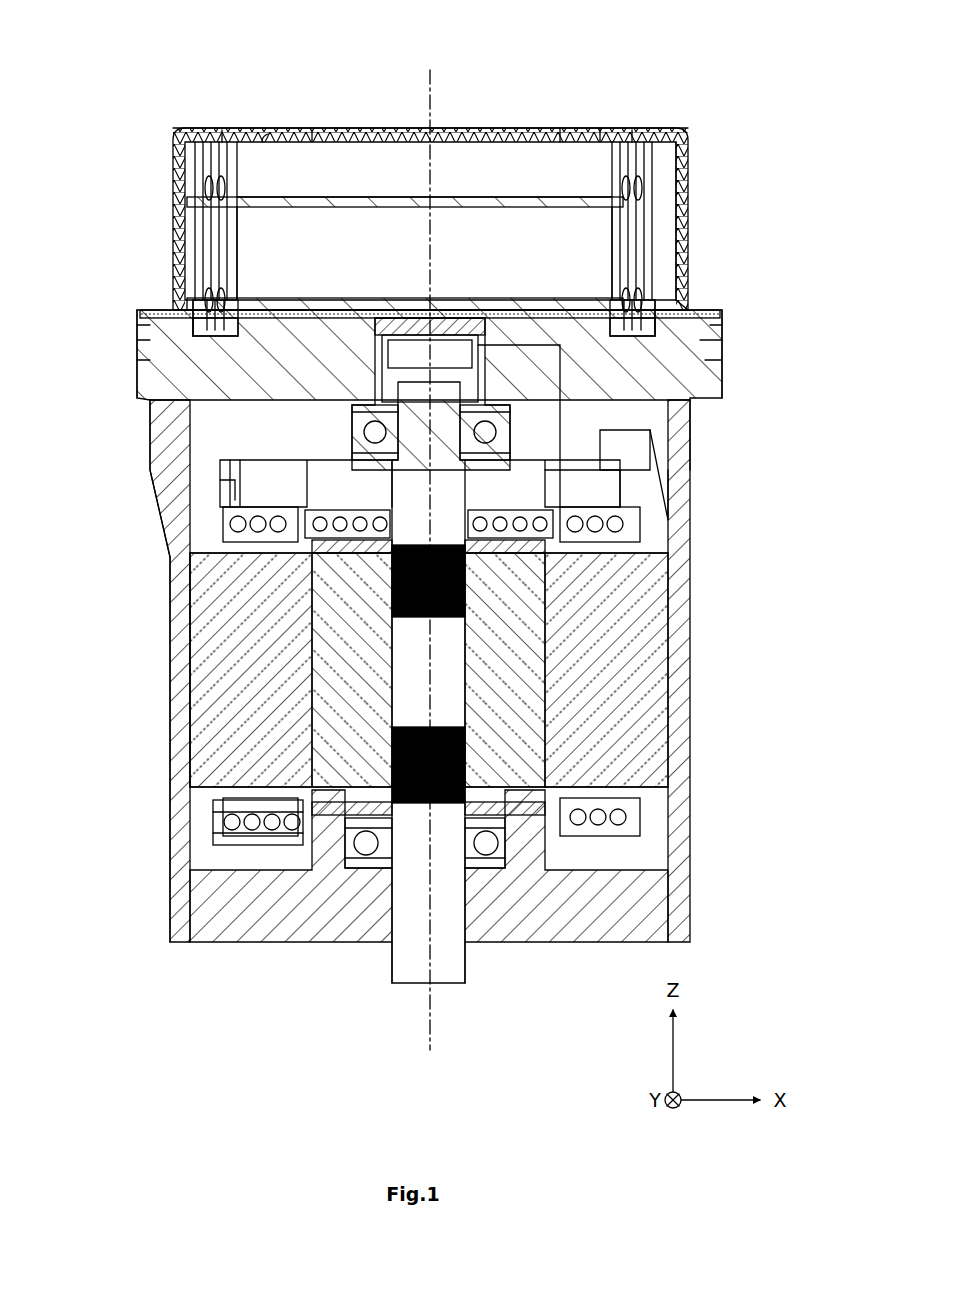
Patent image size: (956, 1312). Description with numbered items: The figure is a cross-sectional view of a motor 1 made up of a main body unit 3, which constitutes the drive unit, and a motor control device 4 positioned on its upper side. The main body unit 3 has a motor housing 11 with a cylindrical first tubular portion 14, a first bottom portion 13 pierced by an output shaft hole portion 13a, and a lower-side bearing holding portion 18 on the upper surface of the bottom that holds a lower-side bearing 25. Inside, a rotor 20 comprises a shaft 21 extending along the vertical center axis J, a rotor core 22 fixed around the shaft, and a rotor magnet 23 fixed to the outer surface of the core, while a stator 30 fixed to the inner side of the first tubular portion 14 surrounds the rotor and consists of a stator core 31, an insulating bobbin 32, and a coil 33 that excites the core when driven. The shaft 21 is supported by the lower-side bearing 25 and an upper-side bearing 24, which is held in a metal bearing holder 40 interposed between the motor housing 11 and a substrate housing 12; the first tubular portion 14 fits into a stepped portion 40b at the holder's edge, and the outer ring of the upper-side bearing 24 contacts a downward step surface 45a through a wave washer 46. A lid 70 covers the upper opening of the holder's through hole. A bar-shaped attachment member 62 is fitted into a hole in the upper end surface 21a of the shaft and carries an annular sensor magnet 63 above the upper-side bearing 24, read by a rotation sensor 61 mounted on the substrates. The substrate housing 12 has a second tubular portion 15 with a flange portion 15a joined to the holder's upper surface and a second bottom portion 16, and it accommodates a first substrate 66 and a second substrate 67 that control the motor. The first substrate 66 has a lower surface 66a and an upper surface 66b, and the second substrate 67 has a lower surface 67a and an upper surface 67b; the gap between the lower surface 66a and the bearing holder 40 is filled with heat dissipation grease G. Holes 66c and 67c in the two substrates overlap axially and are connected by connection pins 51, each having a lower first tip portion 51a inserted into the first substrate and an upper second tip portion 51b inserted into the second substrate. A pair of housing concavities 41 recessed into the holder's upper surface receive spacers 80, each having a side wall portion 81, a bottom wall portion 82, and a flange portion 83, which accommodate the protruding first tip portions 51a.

The motor 1 is at (728, 112).
The main body unit 3 is at (168, 585).
The motor control device 4 is at (170, 135).
The motor housing 11 is at (148, 420).
The substrate housing 12 is at (170, 205).
The first bottom portion 13 is at (235, 944).
The output shaft hole portion 13a is at (380, 944).
The first tubular portion 14 is at (180, 742).
The second tubular portion 15 is at (692, 204).
The flange portion 15a is at (702, 310).
The second bottom portion 16 is at (248, 140).
The lower-side bearing holding portion 18 is at (283, 846).
The rotor 20 is at (552, 790).
The shaft 21 is at (410, 985).
The upper end surface 21a is at (300, 452).
The rotor core 22 is at (500, 790).
The rotor magnet 23 is at (540, 722).
The upper-side bearing 24 is at (350, 450).
The lower-side bearing 25 is at (360, 870).
The stator 30 is at (683, 646).
The stator core 31 is at (612, 666).
The bobbin 32 is at (622, 556).
The coil 33 is at (600, 522).
The bearing holder 40 is at (693, 395).
The stepped portion 40b is at (672, 432).
The housing concavity 41 is at (192, 312).
The downward step surface 45a is at (232, 482).
The wave washer 46 is at (570, 500).
The connection pin 51 is at (209, 242).
The first tip portion 51a is at (207, 292).
The second tip portion 51b is at (206, 186).
The rotation sensor 61 is at (448, 340).
The attachment member 62 is at (562, 450).
The sensor magnet 63 is at (652, 440).
The first substrate 66 is at (482, 298).
The lower surface 66a is at (300, 318).
The upper surface 66b is at (357, 197).
The hole 66c is at (240, 296).
The second substrate 67 is at (600, 140).
The lower surface 67a is at (262, 140).
The upper surface 67b is at (312, 140).
The hole 67c is at (222, 140).
The lid 70 is at (405, 318).
The spacer 80 is at (137, 382).
The side wall portion 81 is at (148, 345).
The bottom wall portion 82 is at (150, 362).
The flange portion 83 is at (147, 328).
The heat dissipation grease G is at (520, 310).
The center axis J is at (432, 75).